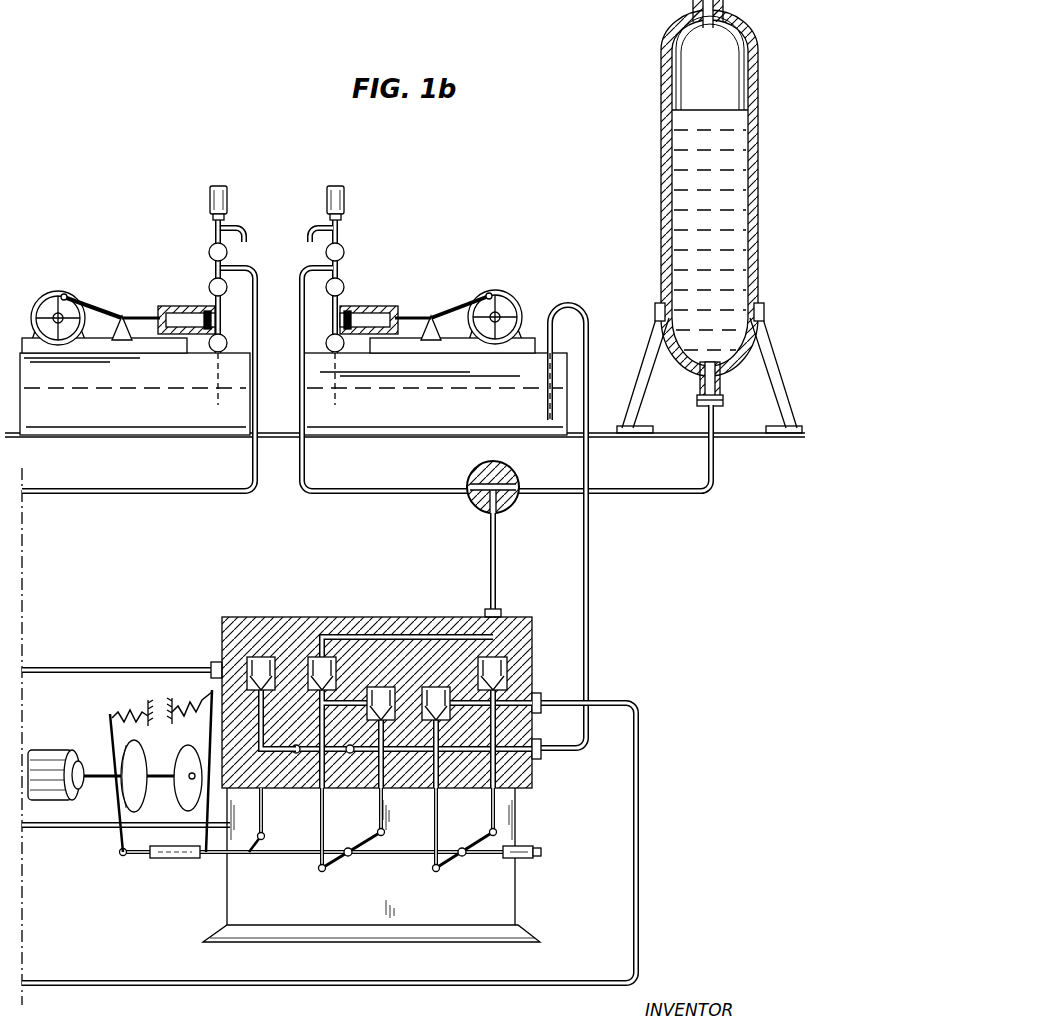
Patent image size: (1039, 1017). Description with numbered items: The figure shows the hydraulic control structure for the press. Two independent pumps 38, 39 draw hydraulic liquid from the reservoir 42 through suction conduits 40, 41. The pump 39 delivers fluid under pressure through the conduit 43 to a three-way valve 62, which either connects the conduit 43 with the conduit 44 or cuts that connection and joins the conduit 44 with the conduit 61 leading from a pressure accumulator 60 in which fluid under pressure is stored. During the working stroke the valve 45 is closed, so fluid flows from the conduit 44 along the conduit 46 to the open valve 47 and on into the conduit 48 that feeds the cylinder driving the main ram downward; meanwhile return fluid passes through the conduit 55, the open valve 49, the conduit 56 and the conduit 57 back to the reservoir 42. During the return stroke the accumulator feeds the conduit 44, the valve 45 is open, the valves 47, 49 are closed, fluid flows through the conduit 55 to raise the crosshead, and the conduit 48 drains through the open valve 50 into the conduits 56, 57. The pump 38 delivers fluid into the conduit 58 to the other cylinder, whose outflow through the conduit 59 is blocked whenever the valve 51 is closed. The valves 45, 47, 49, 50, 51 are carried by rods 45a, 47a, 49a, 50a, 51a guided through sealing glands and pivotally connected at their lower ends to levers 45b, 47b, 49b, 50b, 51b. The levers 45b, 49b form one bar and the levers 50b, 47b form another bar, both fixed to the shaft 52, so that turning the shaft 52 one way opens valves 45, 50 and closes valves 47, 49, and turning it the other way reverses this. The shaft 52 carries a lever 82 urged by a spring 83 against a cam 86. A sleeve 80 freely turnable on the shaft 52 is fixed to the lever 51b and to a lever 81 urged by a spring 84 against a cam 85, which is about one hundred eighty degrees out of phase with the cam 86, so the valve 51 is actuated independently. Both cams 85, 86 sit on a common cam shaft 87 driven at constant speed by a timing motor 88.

The pump 38 is at (178, 306).
The pump 39 is at (368, 306).
The suction conduit 40 is at (221, 318).
The suction conduit 41 is at (331, 307).
The reservoir 42 is at (386, 430).
The conduit 43 is at (417, 495).
The conduit 44 is at (498, 569).
The valve 45 is at (508, 672).
The conduit 46 is at (404, 636).
The valve 47 is at (336, 674).
The conduit 48 is at (70, 829).
The valve 49 is at (438, 688).
The valve 50 is at (384, 688).
The valve 51 is at (262, 658).
The shaft 52 is at (263, 857).
The conduit 55 is at (200, 986).
The conduit 56 is at (528, 756).
The conduit 57 is at (592, 356).
The conduit 58 is at (122, 495).
The conduit 59 is at (134, 667).
The pressure accumulator 60 is at (662, 240).
The conduit 61 is at (650, 495).
The three-way valve 62 is at (512, 478).
The sleeve 80 is at (167, 860).
The lever 81 is at (210, 805).
The lever 82 is at (118, 810).
The spring 83 is at (124, 714).
The spring 84 is at (190, 694).
The cam 85 is at (180, 758).
The cam 86 is at (138, 800).
The cam shaft 87 is at (98, 770).
The timing motor 88 is at (41, 754).
The rod 45a is at (500, 802).
The lever 45b is at (500, 834).
The rod 47a is at (326, 832).
The lever 47b is at (326, 871).
The rod 49a is at (440, 820).
The lever 49b is at (440, 871).
The rod 50a is at (386, 803).
The lever 50b is at (385, 834).
The rod 51a is at (266, 805).
The lever 51b is at (266, 838).